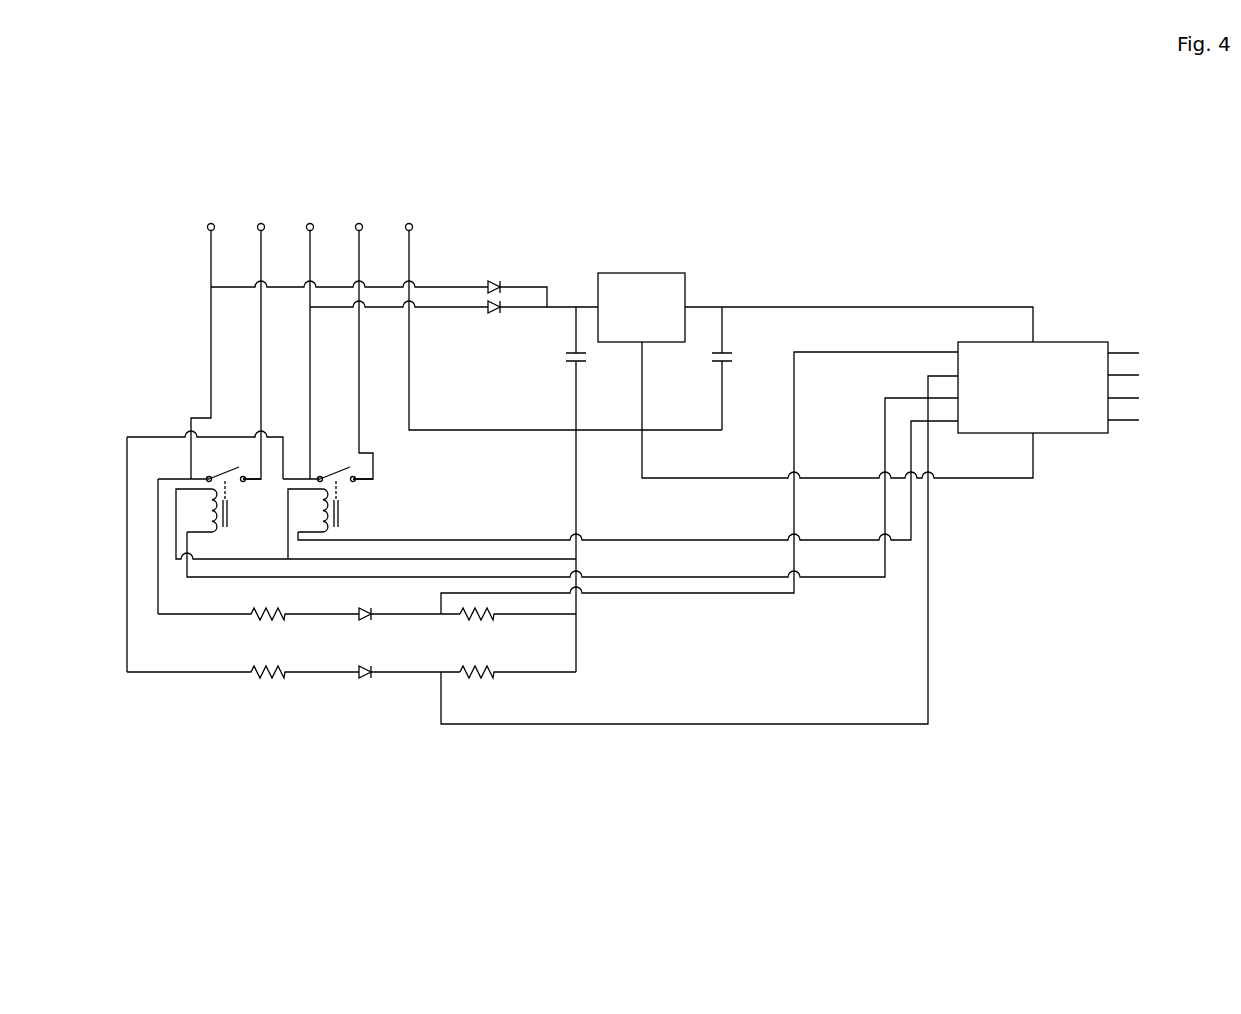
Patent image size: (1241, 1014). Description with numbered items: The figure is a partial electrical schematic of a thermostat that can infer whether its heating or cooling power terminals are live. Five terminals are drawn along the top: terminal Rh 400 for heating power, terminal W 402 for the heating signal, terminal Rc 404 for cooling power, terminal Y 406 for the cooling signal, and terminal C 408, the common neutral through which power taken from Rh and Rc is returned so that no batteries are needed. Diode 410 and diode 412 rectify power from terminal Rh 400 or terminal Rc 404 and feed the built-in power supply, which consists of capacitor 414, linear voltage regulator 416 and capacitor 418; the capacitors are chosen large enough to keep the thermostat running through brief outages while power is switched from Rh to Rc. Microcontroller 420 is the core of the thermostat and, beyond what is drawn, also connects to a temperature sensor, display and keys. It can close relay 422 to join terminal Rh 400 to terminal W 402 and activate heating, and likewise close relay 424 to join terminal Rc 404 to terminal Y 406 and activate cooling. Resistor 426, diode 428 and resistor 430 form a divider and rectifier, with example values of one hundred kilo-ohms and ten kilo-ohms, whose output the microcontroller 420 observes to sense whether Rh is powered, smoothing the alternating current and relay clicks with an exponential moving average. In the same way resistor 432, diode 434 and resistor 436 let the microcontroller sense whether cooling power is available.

The terminal Rh 400 is at (218, 341).
The terminal W 402 is at (270, 341).
The terminal Rc 404 is at (314, 341).
The terminal Y 406 is at (374, 341).
The terminal C 408 is at (563, 317).
The diode 410 is at (379, 286).
The diode 412 is at (454, 318).
The capacitor 414 is at (598, 489).
The linear voltage regulator 416 is at (815, 375).
The capacitor 418 is at (744, 368).
The microcontroller 420 is at (663, 533).
The relay 422 is at (367, 513).
The relay 424 is at (330, 513).
The resistor 426 is at (258, 626).
The diode 428 is at (405, 626).
The resistor 430 is at (518, 627).
The resistor 432 is at (243, 683).
The diode 434 is at (405, 683).
The resistor 436 is at (518, 684).